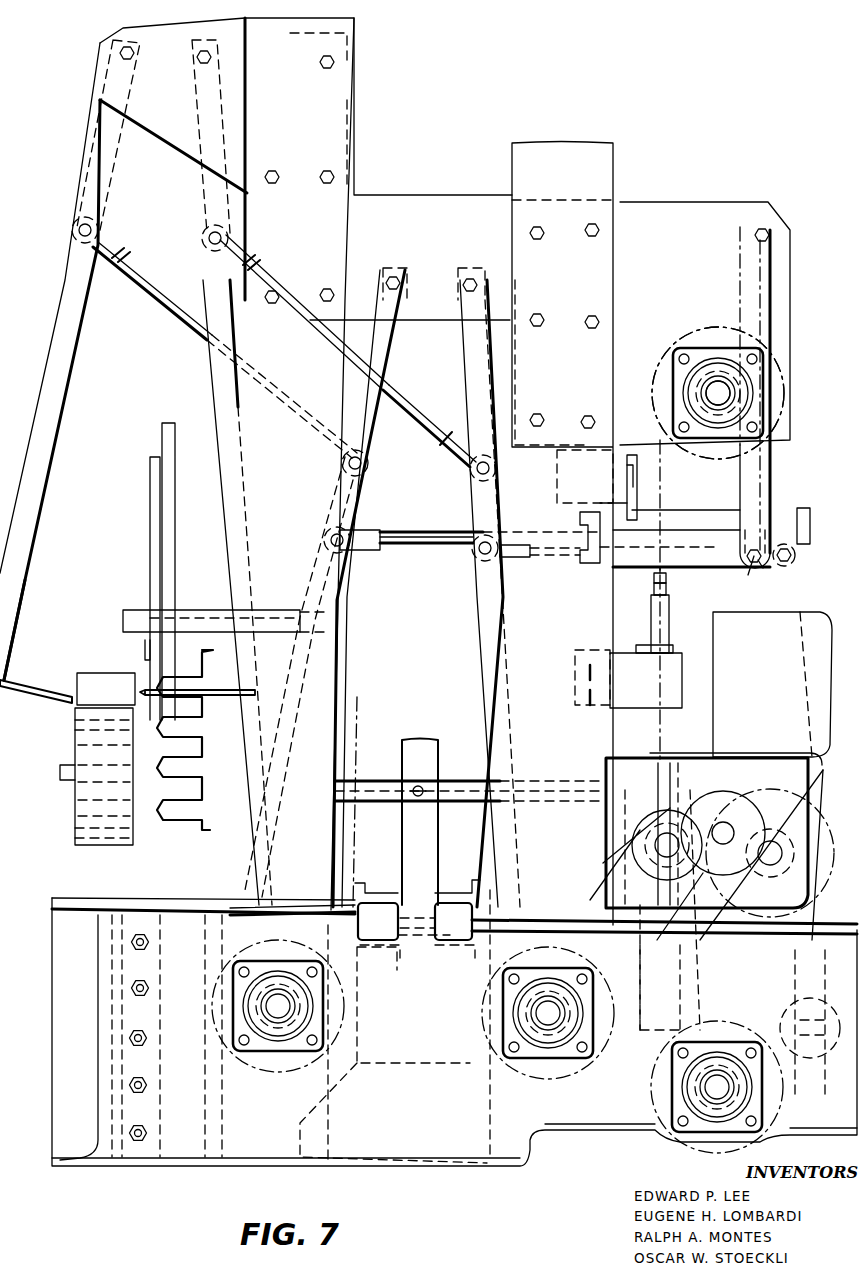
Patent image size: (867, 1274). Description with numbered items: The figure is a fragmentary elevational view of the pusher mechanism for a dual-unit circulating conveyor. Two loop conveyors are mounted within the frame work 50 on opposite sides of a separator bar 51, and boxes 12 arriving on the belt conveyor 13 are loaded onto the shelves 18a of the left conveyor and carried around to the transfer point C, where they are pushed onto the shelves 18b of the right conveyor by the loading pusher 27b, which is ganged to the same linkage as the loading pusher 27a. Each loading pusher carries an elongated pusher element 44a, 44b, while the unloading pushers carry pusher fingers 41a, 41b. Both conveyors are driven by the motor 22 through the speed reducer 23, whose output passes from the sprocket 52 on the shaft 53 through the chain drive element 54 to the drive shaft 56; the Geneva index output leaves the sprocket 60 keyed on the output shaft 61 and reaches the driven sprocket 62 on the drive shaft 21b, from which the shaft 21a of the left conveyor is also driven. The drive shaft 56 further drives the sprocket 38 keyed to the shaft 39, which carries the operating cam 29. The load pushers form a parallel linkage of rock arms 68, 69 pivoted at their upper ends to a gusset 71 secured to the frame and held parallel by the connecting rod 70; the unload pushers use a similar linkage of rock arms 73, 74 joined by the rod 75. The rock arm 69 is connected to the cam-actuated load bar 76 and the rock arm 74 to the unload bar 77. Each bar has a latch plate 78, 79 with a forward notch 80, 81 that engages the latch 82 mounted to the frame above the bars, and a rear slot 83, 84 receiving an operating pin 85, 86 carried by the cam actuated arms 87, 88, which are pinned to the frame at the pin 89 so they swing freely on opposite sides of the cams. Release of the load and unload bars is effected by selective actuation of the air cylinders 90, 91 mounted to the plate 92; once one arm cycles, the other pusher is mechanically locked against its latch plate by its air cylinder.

The boxes 12 is at (125, 672).
The belt conveyor 13 is at (105, 850).
The shelves 18a is at (172, 812).
The shelves 18b is at (455, 893).
The shaft 21a is at (285, 1006).
The drive shaft 21b is at (550, 1013).
The motor 22 is at (672, 534).
The speed reducer 23 is at (714, 830).
The loading pusher 27a is at (38, 520).
The loading pusher 27b is at (285, 855).
The operating cam 29 is at (700, 325).
The sprocket 38 is at (703, 340).
The shaft 39 is at (718, 393).
The pusher fingers 41a is at (200, 690).
The pusher fingers 41b is at (418, 948).
The elongated pusher element 44a is at (25, 670).
The elongated pusher element 44b is at (275, 895).
The frame work 50 is at (352, 190).
The separator bar 51 is at (408, 740).
The sprocket 52 is at (755, 795).
The shaft 53 is at (775, 845).
The chain drive element 54 is at (820, 905).
The drive shaft 56 is at (720, 1087).
The sprocket 60 is at (630, 810).
The output shaft 61 is at (636, 880).
The driven sprocket 62 is at (585, 895).
The rock arm 68 is at (65, 373).
The rock arm 69 is at (355, 497).
The connecting rod 70 is at (160, 295).
The gusset 71 is at (160, 32).
The rock arm 73 is at (218, 395).
The rock arm 74 is at (485, 600).
The rod 75 is at (420, 418).
The load bar 76 is at (395, 530).
The unload bar 77 is at (553, 558).
The latch plate 78 is at (708, 510).
The latch plate 79 is at (710, 570).
The forward notch 80 is at (638, 515).
The forward notch 81 is at (580, 522).
The latch 82 is at (625, 492).
The rear slot 83 is at (748, 530).
The rear slot 84 is at (758, 572).
The operating pin 85 is at (790, 562).
The operating pin 86 is at (750, 572).
The cam actuated arm 87 is at (812, 545).
The cam actuated arm 88 is at (772, 490).
The pin 89 is at (750, 228).
The air cylinder 90 is at (650, 640).
The air cylinder 91 is at (650, 575).
The plate 92 is at (660, 712).
The transfer point C is at (382, 920).